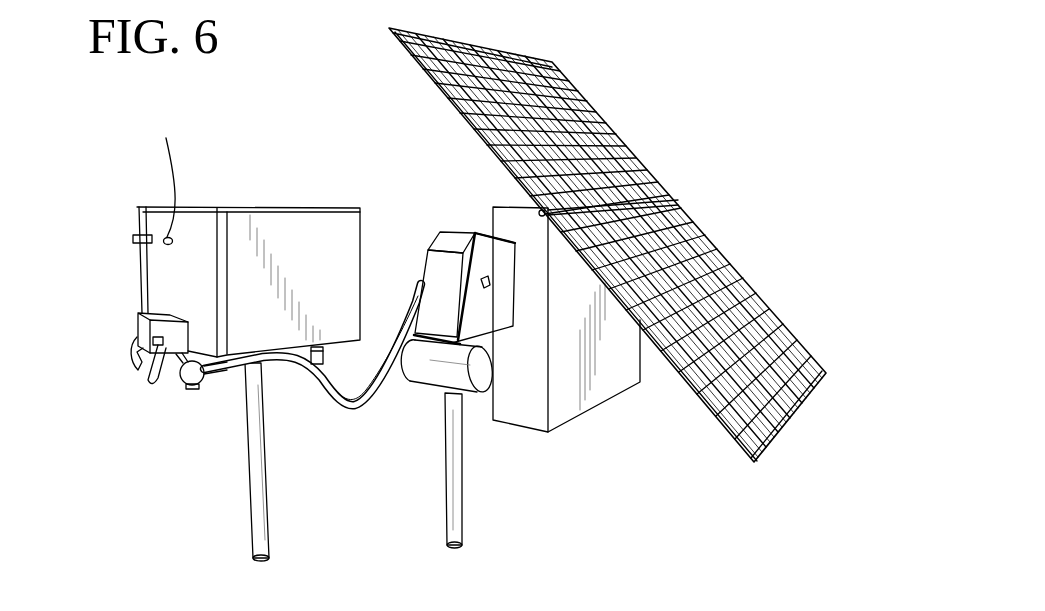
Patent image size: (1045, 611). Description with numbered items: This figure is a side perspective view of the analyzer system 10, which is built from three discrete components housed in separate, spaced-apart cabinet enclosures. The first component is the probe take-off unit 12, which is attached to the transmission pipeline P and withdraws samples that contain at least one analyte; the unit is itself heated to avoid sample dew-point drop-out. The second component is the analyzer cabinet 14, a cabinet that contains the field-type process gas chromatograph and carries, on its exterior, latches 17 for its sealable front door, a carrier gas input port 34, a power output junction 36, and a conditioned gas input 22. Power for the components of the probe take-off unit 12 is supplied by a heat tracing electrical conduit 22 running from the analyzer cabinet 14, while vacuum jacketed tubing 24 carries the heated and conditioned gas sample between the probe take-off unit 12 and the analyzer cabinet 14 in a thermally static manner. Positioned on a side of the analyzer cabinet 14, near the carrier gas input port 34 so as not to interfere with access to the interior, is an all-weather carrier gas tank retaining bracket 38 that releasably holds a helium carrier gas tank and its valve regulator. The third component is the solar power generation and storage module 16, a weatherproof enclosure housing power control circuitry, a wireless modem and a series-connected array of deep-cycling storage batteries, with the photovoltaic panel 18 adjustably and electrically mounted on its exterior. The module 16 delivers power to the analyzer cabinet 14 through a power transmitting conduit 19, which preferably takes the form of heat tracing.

The analyzer system 10 is at (754, 533).
The probe take-off unit 12 is at (493, 313).
The analyzer cabinet 14 is at (170, 276).
The solar power generation and storage module 16 is at (608, 378).
The exterior latches 17 is at (133, 238).
The photovoltaic panel 18 is at (723, 270).
The power transmitting conduit 19 is at (245, 500).
The heat tracing electrical conduit 22 is at (347, 408).
The vacuum jacketed tubing 24 is at (323, 367).
The carrier gas input port 34 is at (168, 179).
The power output junction 36 is at (190, 373).
The carrier gas tank retaining bracket 38 is at (150, 326).
The transmission pipeline P is at (479, 395).